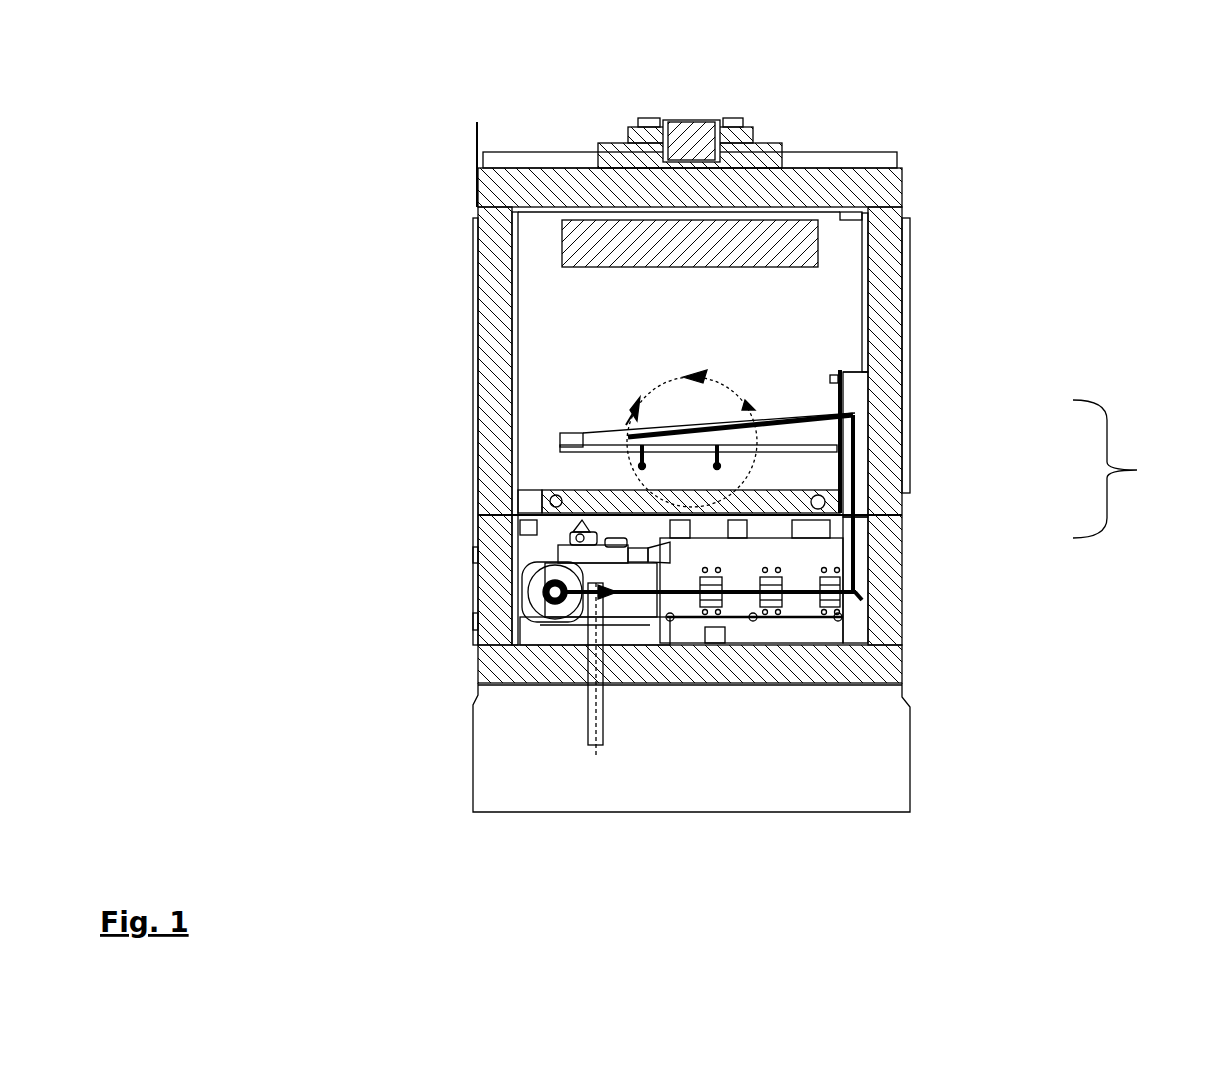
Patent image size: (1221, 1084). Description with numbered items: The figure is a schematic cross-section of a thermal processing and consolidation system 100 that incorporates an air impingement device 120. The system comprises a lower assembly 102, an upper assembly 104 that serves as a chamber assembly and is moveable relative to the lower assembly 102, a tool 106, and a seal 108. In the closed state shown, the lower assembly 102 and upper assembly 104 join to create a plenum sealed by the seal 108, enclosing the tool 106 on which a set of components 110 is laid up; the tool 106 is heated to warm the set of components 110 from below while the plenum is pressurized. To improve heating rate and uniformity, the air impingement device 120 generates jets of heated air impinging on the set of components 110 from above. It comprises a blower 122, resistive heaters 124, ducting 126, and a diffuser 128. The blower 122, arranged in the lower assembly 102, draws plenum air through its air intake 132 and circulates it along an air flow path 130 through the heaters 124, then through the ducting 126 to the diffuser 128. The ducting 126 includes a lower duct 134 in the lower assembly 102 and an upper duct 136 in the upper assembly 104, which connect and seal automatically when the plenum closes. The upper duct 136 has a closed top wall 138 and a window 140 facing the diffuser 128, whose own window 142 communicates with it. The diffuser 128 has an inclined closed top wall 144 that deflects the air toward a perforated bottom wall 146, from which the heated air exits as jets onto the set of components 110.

The thermal processing and consolidation system 100 is at (1063, 113).
The lower assembly 102 is at (487, 578).
The upper assembly 104 is at (485, 185).
The tool 106 is at (550, 490).
The seal 108 is at (482, 513).
The set of components 110 is at (600, 495).
The air impingement device 120 is at (923, 592).
The blower 122 is at (478, 517).
The heaters 124 is at (695, 612).
The ducting 126 is at (1140, 469).
The diffuser 128 is at (748, 407).
The air flow path 130 is at (858, 597).
The air intake 132 is at (597, 717).
The lower duct 134 is at (877, 565).
The upper duct 136 is at (860, 470).
The closed top wall 138 is at (863, 372).
The window 140 is at (850, 425).
The window 142 is at (830, 412).
The closed top wall 144 is at (612, 427).
The perforated bottom wall 146 is at (785, 435).